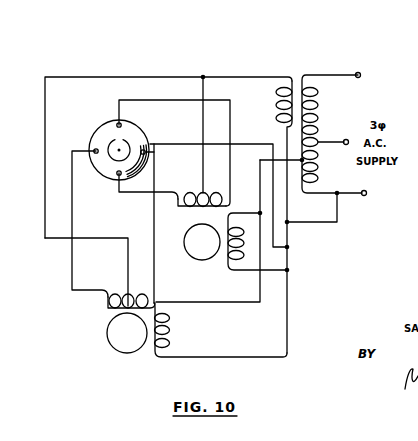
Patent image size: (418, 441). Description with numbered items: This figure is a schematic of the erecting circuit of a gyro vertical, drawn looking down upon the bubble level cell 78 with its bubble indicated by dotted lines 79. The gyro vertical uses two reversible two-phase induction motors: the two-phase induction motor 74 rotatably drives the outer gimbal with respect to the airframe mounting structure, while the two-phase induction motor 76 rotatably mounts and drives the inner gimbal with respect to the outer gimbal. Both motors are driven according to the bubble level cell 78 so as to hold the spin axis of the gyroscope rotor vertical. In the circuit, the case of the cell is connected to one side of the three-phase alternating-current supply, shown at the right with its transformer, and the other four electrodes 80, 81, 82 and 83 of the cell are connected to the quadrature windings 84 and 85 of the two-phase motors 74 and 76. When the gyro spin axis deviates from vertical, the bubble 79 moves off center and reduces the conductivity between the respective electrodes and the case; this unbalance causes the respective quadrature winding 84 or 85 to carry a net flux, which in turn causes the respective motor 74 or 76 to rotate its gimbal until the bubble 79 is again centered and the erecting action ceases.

The two-phase induction motor 74 is at (118, 348).
The two-phase induction motor 76 is at (203, 260).
The bubble level cell 78 is at (102, 165).
The bubble 79 is at (118, 149).
The electrode 80 is at (123, 124).
The electrode 81 is at (148, 153).
The electrode 82 is at (118, 176).
The electrode 83 is at (93, 150).
The quadrature winding 84 is at (102, 312).
The quadrature winding 85 is at (187, 210).